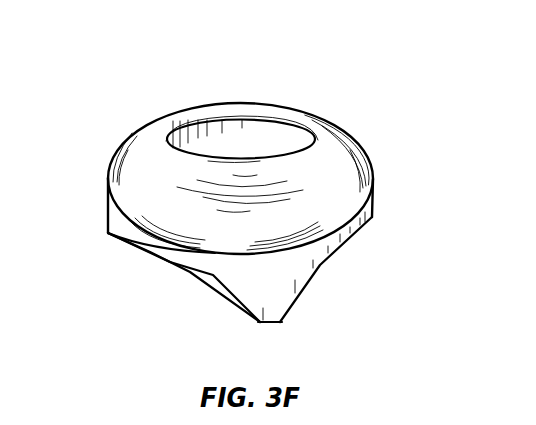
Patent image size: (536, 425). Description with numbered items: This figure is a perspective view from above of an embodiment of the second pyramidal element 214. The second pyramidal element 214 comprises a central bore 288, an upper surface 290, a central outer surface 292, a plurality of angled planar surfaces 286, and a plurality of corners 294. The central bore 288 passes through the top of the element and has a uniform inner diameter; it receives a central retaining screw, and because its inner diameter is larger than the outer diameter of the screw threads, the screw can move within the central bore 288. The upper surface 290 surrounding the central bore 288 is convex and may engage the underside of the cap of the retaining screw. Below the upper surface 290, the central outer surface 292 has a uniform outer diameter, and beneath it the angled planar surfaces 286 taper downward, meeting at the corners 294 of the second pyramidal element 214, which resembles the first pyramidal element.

The second pyramidal element 214 is at (142, 340).
The angled planar surfaces 286 is at (208, 283).
The central bore 288 is at (263, 135).
The upper surface 290 is at (130, 158).
The central outer surface 292 is at (352, 230).
The corners 294 is at (282, 306).